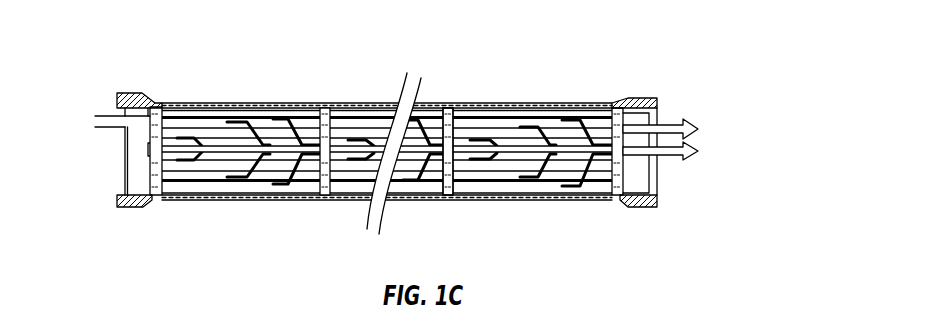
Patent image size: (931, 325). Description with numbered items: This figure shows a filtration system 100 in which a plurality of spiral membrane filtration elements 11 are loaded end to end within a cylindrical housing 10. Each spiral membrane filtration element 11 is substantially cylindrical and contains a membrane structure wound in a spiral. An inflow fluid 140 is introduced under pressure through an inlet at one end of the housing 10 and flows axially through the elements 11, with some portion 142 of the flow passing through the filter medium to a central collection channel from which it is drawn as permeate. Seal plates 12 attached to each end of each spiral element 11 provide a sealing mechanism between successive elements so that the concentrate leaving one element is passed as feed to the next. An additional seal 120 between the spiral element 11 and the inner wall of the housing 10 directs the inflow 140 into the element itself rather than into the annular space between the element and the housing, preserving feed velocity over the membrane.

The housing 10 is at (152, 205).
The spiral membrane filtration element 11 is at (213, 108).
The seal plate 12 is at (154, 72).
The reactor assembly 100 is at (361, 133).
The additional seal 120 is at (458, 197).
The inflow fluid 140 is at (110, 117).
The portion passing through the filter medium 142 is at (565, 184).